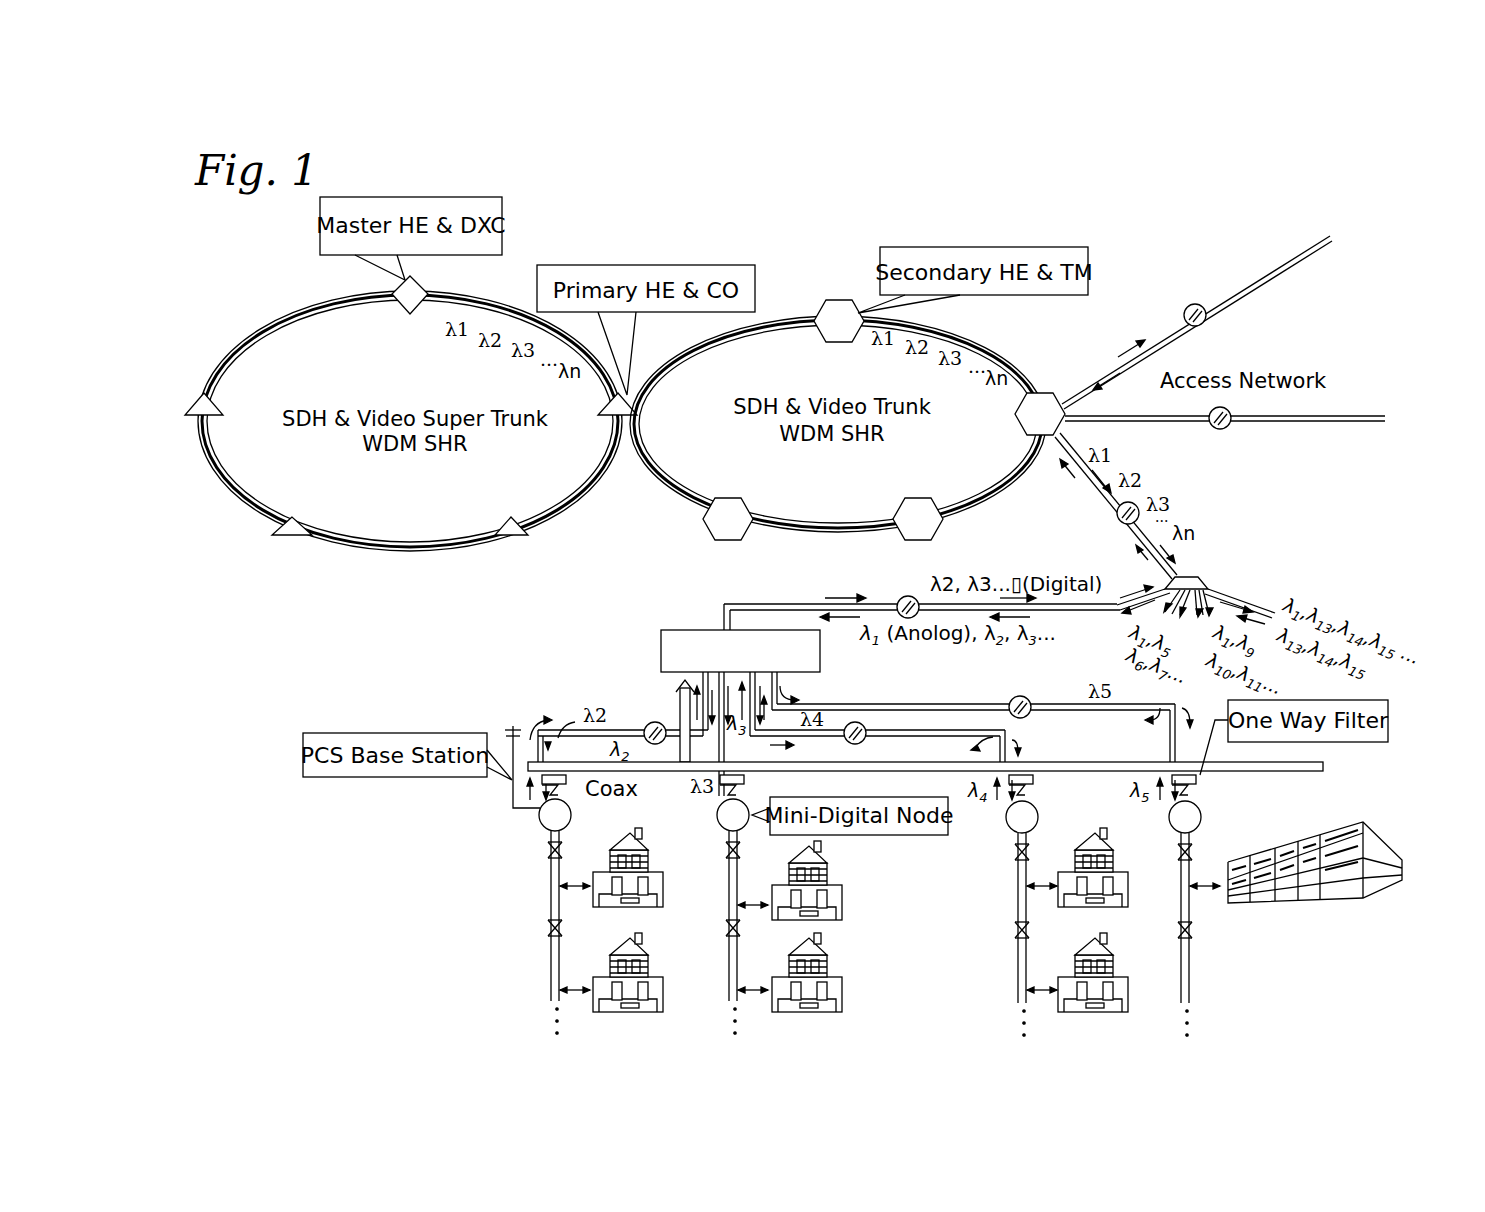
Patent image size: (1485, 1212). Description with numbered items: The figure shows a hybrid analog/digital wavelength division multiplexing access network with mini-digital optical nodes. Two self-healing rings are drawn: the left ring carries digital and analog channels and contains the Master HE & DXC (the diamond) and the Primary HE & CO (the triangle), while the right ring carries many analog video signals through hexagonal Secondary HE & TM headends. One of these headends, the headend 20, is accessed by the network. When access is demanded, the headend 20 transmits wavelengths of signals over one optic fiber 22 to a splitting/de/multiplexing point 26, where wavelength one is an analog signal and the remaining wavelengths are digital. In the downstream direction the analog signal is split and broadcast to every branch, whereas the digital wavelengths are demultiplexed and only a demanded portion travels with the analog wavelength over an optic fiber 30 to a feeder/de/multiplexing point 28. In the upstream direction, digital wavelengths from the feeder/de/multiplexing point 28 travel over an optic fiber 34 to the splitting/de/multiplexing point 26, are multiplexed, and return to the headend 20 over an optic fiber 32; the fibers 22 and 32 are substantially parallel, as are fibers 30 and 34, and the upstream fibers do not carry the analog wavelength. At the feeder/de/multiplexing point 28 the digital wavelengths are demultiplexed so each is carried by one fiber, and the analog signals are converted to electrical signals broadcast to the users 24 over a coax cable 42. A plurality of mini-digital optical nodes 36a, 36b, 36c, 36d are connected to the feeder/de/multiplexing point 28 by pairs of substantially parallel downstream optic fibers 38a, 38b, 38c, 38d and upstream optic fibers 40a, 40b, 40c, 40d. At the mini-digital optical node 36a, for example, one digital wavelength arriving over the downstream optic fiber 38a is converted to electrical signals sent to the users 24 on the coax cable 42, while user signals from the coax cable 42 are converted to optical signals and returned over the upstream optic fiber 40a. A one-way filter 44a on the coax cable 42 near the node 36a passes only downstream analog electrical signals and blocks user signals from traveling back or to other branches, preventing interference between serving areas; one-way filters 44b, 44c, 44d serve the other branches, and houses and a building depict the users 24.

The headend 20 is at (1040, 393).
The optic fiber 22 is at (1068, 450).
The users 24 is at (664, 890).
The splitting/de/multiplexing point 26 is at (1437, 553).
The feeder/de/multiplexing point 28 is at (692, 630).
The optic fiber 30 is at (1077, 612).
The optic fiber 32 is at (1113, 500).
The optic fiber 34 is at (884, 600).
The mini-digital optical node 36a is at (541, 826).
The mini-digital optical node 36b is at (718, 826).
The mini-digital optical node 36c is at (1007, 828).
The mini-digital optical node 36d is at (1203, 816).
The downstream optic fiber 38a is at (610, 732).
The downstream optic fiber 38b is at (724, 735).
The downstream optic fiber 38c is at (917, 727).
The downstream optic fiber 38d is at (1053, 704).
The upstream optic fiber 40a is at (578, 728).
The upstream optic fiber 40b is at (705, 748).
The upstream optic fiber 40c is at (946, 736).
The upstream optic fiber 40d is at (1118, 713).
The coax cable 42 is at (678, 706).
The one-way filter 44a is at (568, 790).
The one-way filter 44b is at (746, 780).
The one-way filter 44c is at (1035, 781).
The one-way filter 44d is at (1198, 781).